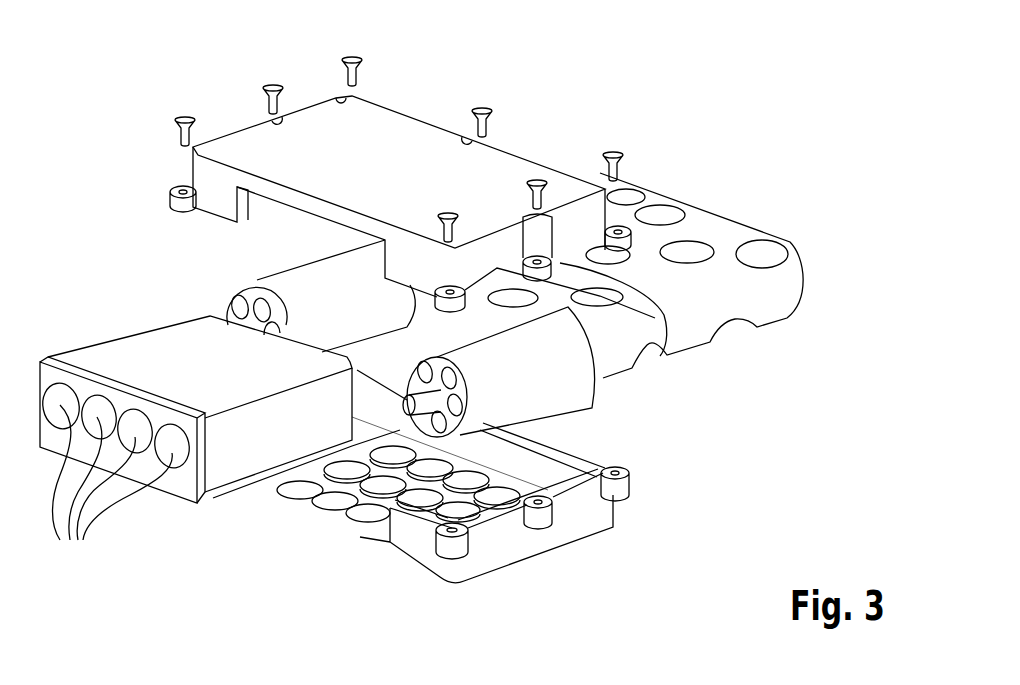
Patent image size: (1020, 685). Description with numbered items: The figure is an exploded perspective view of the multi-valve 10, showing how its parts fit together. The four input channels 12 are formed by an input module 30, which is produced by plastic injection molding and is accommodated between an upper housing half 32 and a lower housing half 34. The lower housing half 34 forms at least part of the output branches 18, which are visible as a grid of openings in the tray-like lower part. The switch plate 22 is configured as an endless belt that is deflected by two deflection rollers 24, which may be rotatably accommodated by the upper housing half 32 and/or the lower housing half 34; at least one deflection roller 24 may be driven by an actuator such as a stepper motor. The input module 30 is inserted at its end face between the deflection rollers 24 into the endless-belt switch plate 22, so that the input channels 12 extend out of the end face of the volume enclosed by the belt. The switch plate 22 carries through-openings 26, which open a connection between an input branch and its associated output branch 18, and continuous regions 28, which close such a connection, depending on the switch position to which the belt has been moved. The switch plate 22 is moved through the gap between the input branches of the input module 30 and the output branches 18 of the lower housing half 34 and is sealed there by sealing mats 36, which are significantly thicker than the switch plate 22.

The multi-valve 10 is at (622, 73).
The input channels 12 is at (113, 494).
The output branches 18 is at (372, 518).
The switch plate 22 is at (712, 227).
The deflection rollers 24 is at (295, 293).
The through-openings 26 is at (662, 213).
The continuous regions 28 is at (678, 298).
The input module 30 is at (122, 363).
The upper housing half 32 is at (403, 130).
The lower housing half 34 is at (498, 548).
The sealing mats 36 is at (340, 487).